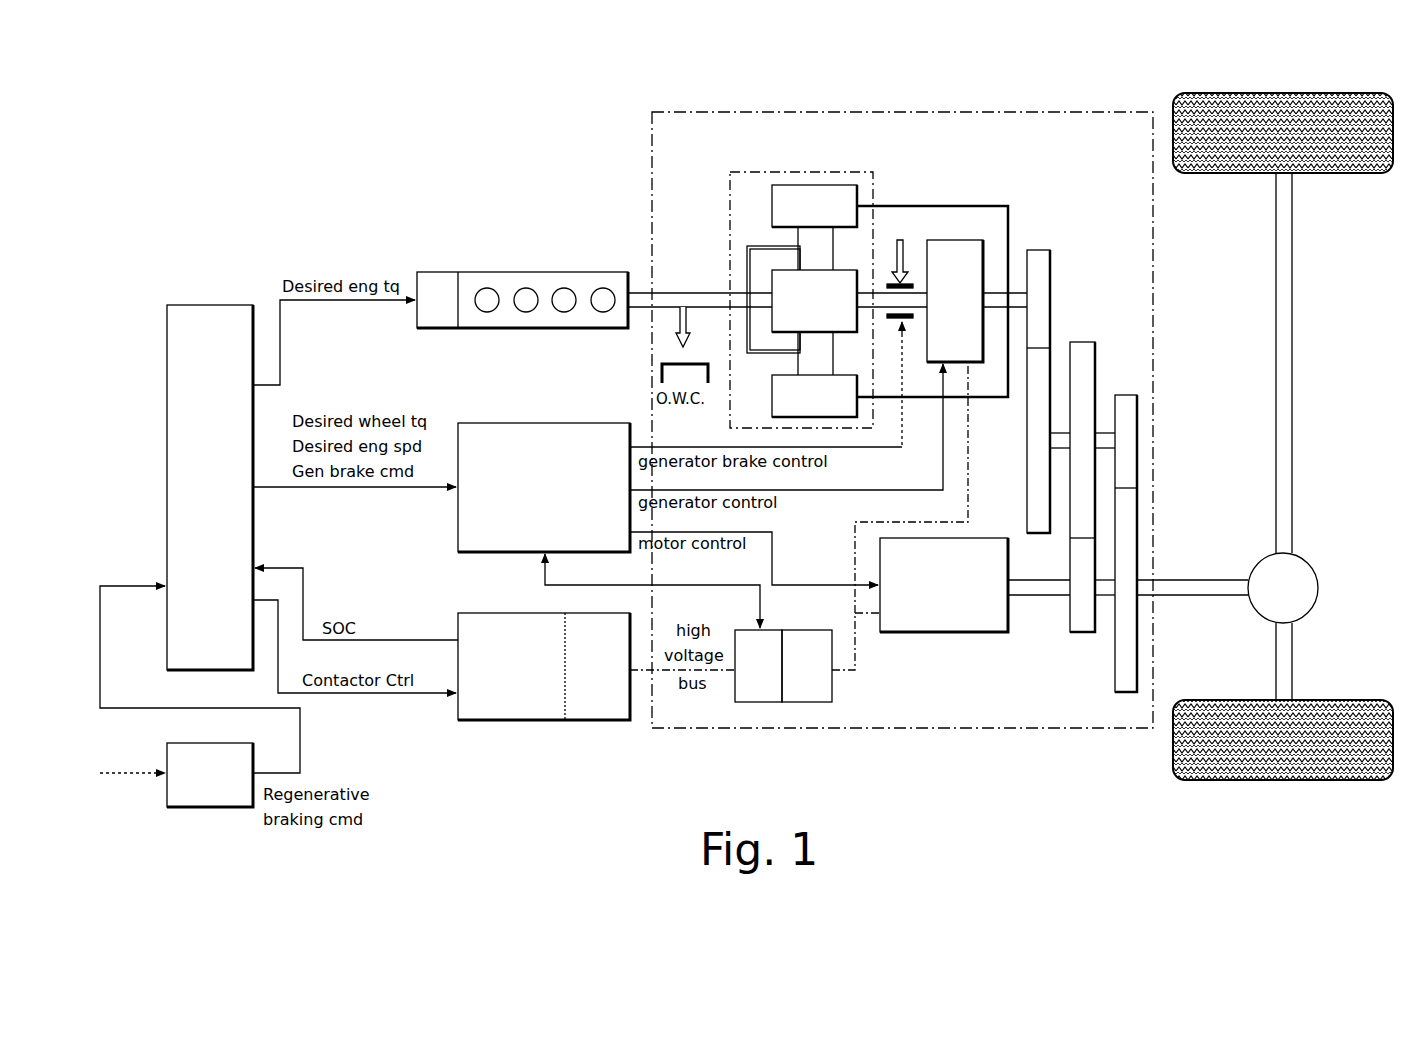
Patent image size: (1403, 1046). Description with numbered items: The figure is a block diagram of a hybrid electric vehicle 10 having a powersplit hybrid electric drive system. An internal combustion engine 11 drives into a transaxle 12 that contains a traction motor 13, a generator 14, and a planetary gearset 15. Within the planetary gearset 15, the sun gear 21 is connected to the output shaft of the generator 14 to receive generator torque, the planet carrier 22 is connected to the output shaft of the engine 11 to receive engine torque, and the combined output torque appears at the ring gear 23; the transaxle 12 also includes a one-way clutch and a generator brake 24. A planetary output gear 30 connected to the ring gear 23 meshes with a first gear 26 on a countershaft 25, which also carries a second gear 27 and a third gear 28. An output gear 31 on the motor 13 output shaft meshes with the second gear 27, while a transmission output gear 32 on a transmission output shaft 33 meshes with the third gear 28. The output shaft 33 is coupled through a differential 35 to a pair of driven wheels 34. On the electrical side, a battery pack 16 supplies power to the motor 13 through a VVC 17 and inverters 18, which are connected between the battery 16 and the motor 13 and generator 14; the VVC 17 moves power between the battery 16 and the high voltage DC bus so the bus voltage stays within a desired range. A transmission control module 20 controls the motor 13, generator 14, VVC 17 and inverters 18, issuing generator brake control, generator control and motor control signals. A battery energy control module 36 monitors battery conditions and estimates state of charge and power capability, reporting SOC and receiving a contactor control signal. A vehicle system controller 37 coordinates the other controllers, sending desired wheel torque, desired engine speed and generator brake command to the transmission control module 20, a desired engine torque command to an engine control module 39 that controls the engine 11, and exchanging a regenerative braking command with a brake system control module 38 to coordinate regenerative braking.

The hybrid electric vehicle 10 is at (553, 112).
The internal combustion engine 11 is at (468, 272).
The transaxle 12 is at (1027, 112).
The traction motor 13 is at (948, 632).
The generator 14 is at (968, 240).
The planetary gearset 15 is at (800, 277).
The battery pack 16 is at (580, 720).
The VVC 17 is at (758, 702).
The inverters 18 is at (805, 702).
The transmission control module 20 is at (540, 423).
The sun gear 21 is at (750, 282).
The planet carrier 22 is at (752, 246).
The ring gear 23 is at (772, 197).
The generator brake 24 is at (912, 281).
The countershaft 25 is at (1103, 433).
The first gear 26 is at (1027, 403).
The second gear 27 is at (1095, 357).
The third gear 28 is at (1137, 438).
The planetary output gear 30 is at (1050, 268).
The output gear 31 is at (1070, 615).
The transmission output gear 32 is at (1137, 512).
The transmission output shaft 33 is at (1183, 595).
The driven wheels 34 is at (1342, 173).
The differential 35 is at (1300, 556).
The battery energy control module 36 is at (535, 720).
The vehicle system controller 37 is at (210, 305).
The brake system control module 38 is at (210, 807).
The engine control module 39 is at (440, 328).